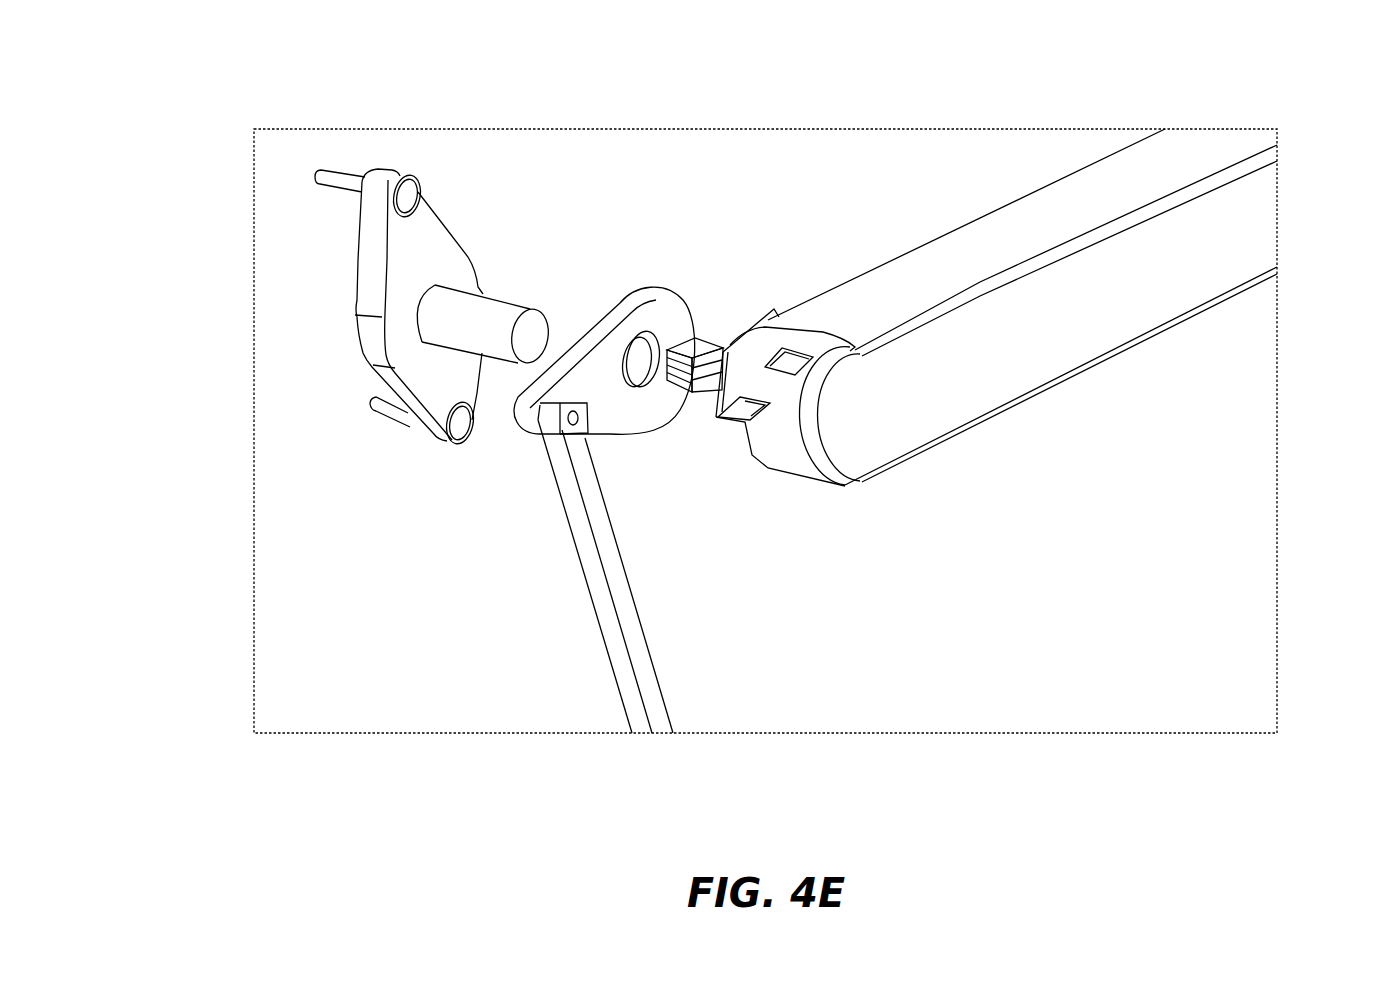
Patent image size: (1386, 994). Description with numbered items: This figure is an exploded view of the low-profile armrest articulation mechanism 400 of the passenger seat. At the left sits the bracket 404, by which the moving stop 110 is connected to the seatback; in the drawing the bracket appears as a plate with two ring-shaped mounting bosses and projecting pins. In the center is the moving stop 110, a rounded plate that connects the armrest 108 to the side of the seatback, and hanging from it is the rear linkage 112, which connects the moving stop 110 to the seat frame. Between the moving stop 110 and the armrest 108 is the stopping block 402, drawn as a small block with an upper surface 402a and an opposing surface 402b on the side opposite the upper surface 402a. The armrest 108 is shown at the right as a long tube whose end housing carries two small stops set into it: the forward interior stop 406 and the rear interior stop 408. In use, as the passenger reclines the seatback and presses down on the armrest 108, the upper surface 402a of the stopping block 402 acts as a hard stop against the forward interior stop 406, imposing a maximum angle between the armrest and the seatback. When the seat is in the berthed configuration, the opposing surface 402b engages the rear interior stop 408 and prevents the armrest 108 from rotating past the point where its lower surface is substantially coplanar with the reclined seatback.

The armrest articulation mechanism 400 is at (182, 130).
The bracket 404 is at (420, 266).
The moving stop 110 is at (610, 370).
The rear linkage 112 is at (592, 562).
The stopping block 402 is at (724, 350).
The upper surface 402a is at (698, 343).
The opposing surface 402b is at (686, 372).
The rear interior stop 408 is at (786, 355).
The forward interior stop 406 is at (746, 407).
The armrest 108 is at (1103, 298).